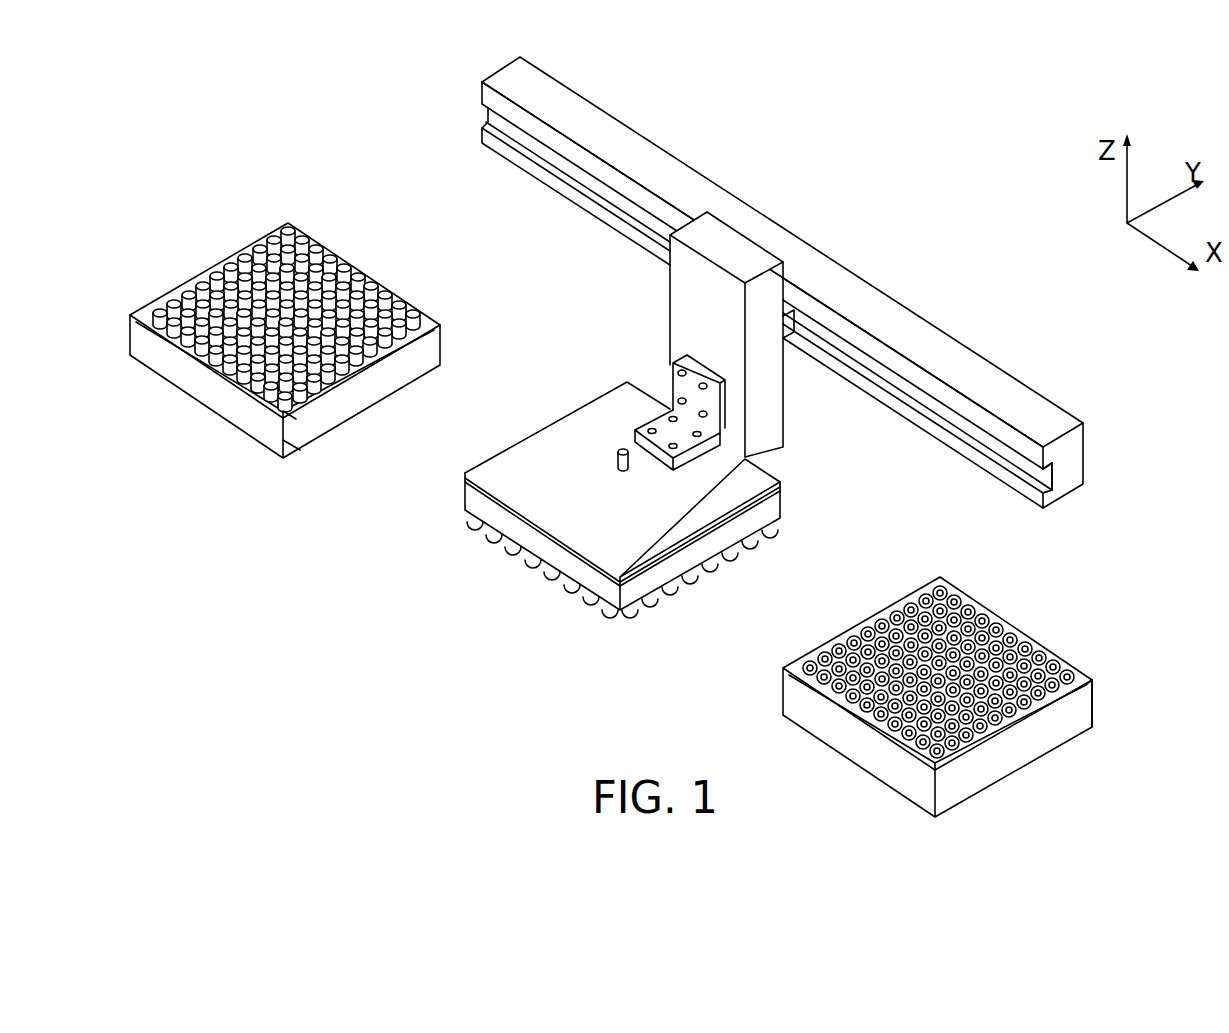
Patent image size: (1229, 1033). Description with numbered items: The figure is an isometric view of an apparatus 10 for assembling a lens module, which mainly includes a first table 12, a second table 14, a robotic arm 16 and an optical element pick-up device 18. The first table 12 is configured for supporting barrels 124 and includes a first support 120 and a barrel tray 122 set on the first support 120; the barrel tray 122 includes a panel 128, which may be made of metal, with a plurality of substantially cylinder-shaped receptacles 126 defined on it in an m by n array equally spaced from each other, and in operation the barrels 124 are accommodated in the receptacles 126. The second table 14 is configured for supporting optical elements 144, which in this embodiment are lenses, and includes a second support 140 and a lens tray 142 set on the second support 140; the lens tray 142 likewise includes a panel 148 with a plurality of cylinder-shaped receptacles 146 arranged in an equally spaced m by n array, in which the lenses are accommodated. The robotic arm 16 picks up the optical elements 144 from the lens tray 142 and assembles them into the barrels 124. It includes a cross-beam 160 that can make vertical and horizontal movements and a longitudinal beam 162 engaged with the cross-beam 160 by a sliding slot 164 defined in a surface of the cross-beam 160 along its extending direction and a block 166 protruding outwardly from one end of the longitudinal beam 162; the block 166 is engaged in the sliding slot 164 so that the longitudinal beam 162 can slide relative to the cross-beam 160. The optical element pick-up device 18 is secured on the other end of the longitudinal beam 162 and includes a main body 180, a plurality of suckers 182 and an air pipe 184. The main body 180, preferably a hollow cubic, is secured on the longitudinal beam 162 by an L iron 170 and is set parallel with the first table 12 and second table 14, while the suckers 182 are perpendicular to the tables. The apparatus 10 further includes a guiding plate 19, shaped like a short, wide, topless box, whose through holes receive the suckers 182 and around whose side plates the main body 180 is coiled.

The apparatus for assembling lens module 10 is at (812, 108).
The first table 12 is at (291, 376).
The first support 120 is at (158, 368).
The barrel tray 122 is at (377, 478).
The barrels 124 is at (412, 310).
The receptacles 126 is at (322, 387).
The panel 128 is at (290, 408).
The second table 14 is at (994, 697).
The second support 140 is at (1037, 742).
The lens tray 142 is at (1148, 660).
The optical elements 144 is at (1060, 670).
The receptacles 146 is at (1083, 670).
The panel 148 is at (1062, 703).
The robotic arm 16 is at (825, 282).
The cross-beam 160 is at (965, 368).
The longitudinal beam 162 is at (733, 253).
The sliding slot 164 is at (1053, 472).
The block 166 is at (790, 318).
The optical element pick-up device 18 is at (653, 477).
The main body 180 is at (700, 505).
The suckers 182 is at (630, 612).
The air pipe 184 is at (613, 458).
The guiding plate 19 is at (682, 565).
The L iron 170 is at (668, 373).